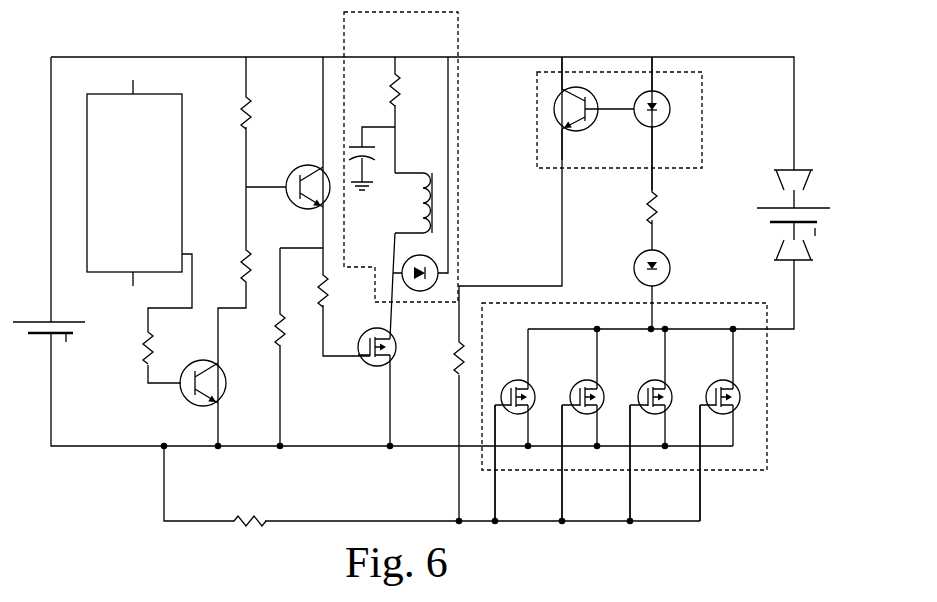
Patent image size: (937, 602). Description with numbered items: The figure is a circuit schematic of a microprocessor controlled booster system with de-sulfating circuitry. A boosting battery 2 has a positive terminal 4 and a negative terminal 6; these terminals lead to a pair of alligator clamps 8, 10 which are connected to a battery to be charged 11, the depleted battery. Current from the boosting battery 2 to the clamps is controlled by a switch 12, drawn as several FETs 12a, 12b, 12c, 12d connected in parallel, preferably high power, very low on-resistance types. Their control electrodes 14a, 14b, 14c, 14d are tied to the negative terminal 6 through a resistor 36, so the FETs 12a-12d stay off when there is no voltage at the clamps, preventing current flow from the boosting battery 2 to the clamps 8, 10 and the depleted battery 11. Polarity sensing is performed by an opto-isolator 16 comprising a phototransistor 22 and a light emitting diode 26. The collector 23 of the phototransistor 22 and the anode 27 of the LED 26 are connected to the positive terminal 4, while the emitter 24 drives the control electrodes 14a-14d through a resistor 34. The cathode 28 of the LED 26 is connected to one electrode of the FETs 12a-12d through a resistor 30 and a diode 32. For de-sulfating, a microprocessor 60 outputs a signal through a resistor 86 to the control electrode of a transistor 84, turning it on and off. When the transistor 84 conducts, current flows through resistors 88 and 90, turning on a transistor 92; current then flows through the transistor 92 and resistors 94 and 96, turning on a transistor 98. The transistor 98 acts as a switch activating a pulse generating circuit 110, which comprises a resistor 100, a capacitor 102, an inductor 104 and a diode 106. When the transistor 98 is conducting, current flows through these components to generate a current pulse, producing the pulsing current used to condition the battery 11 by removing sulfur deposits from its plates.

The boosting battery 2 is at (27, 301).
The positive terminal 4 is at (64, 303).
The negative terminal 6 is at (60, 347).
The alligator clamp 8 is at (806, 170).
The alligator clamp 10 is at (804, 262).
The battery to be charged 11 is at (809, 212).
The switch 12 is at (770, 428).
The FET 12a is at (513, 412).
The FET 12b is at (582, 412).
The FET 12c is at (650, 412).
The FET 12d is at (718, 412).
The control electrode 14a is at (513, 383).
The control electrode 14b is at (582, 383).
The control electrode 14c is at (650, 383).
The control electrode 14d is at (718, 383).
The opto-isolator 16 is at (622, 72).
The phototransistor 22 is at (580, 132).
The collector 23 is at (561, 78).
The emitter 24 is at (561, 143).
The light emitting diode 26 is at (669, 111).
The anode 27 is at (657, 88).
The cathode 28 is at (657, 145).
The resistor 30 is at (665, 207).
The diode 32 is at (670, 266).
The resistor 34 is at (443, 357).
The resistor 36 is at (249, 538).
The microprocessor 60 is at (110, 93).
The transistor 84 is at (188, 403).
The resistor 86 is at (132, 347).
The resistor 88 is at (228, 265).
The resistor 90 is at (228, 112).
The transistor 92 is at (301, 175).
The resistor 94 is at (335, 290).
The resistor 96 is at (265, 329).
The transistor 98 is at (372, 366).
The resistor 100 is at (415, 89).
The capacitor 102 is at (347, 150).
The inductor 104 is at (417, 200).
The diode 106 is at (440, 277).
The pulse generating circuit 110 is at (460, 38).